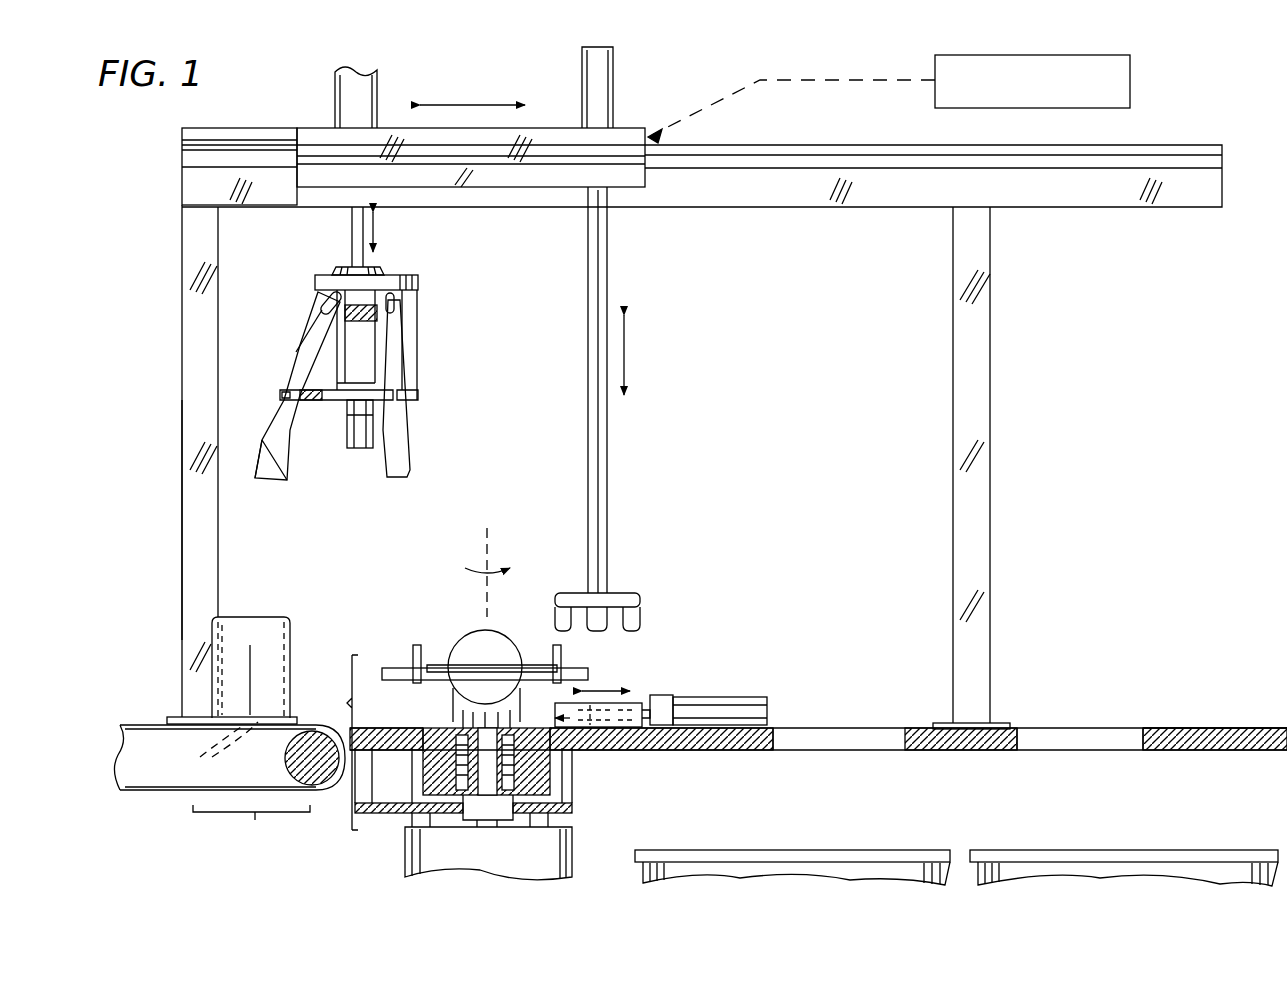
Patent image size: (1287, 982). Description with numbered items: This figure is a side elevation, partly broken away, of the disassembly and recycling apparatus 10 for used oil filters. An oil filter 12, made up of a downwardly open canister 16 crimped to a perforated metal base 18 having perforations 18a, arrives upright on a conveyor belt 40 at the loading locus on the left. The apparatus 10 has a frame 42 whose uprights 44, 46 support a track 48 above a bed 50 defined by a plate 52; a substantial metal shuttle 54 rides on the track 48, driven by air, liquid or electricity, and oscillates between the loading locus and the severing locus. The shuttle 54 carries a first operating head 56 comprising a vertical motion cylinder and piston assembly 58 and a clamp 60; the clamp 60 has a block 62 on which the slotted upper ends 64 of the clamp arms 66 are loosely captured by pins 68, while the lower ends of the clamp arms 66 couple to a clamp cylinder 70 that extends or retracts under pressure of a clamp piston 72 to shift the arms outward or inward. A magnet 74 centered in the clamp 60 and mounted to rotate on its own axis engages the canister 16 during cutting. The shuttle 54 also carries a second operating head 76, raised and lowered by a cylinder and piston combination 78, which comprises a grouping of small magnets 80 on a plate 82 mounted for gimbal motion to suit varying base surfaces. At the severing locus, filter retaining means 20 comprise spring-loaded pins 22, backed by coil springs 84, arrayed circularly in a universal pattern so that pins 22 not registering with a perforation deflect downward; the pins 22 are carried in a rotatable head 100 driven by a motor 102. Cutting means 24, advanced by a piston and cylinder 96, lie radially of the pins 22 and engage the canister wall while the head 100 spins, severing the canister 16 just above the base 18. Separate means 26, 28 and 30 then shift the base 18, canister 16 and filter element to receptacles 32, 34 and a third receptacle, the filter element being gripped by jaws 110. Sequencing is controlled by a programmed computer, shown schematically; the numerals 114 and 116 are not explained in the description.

The disassembly and recycling apparatus 10 is at (1148, 125).
The oil filter 12 is at (248, 656).
The canister 16 is at (290, 636).
The perforated metal base 18 is at (244, 716).
The perforations 18a is at (210, 745).
The filter retaining means 20 is at (540, 660).
The pins 22 is at (456, 716).
The cutting means 24 is at (640, 703).
The base shifting means 26 is at (385, 361).
The canister shifting means 28 is at (642, 278).
The filter element shifting means 30 is at (482, 704).
The receptacle 32 is at (1132, 850).
The receptacle 34 is at (842, 850).
The conveyor belt 40 is at (152, 790).
The frame 42 is at (181, 197).
The upright 44 is at (182, 522).
The upright 46 is at (990, 513).
The track 48 is at (715, 156).
The bed 50 is at (1183, 715).
The plate 52 is at (1200, 752).
The shuttle 54 is at (540, 128).
The first operating head 56 is at (420, 290).
The vertical motion cylinder and piston assembly 58 is at (335, 92).
The clamp 60 is at (293, 325).
The block 62 is at (385, 290).
The slotted upper ends 64 is at (300, 331).
The clamp arms 66 is at (272, 470).
The pins 68 is at (320, 298).
The clamp cylinder 70 is at (378, 354).
The clamp piston 72 is at (378, 318).
The magnet 74 is at (358, 448).
The second operating head 76 is at (617, 572).
The cylinder and piston combination 78 is at (613, 80).
The small magnets 80 is at (642, 615).
The plate 82 is at (628, 598).
The coil springs 84 is at (540, 762).
The piston and cylinder 96 is at (740, 697).
The rotatable head 100 is at (555, 794).
The motor 102 is at (430, 855).
The jaws 110 is at (420, 660).
The table section 114 is at (1143, 735).
The table section 116 is at (905, 733).